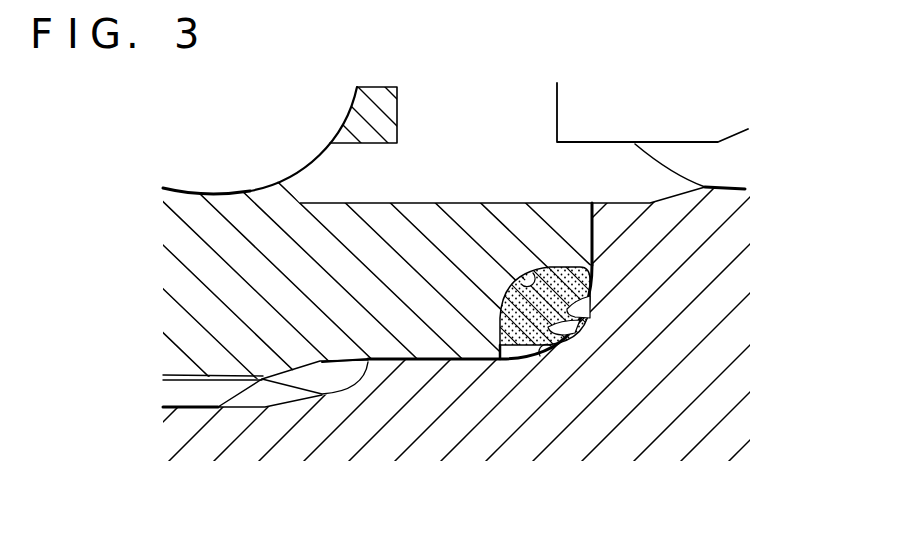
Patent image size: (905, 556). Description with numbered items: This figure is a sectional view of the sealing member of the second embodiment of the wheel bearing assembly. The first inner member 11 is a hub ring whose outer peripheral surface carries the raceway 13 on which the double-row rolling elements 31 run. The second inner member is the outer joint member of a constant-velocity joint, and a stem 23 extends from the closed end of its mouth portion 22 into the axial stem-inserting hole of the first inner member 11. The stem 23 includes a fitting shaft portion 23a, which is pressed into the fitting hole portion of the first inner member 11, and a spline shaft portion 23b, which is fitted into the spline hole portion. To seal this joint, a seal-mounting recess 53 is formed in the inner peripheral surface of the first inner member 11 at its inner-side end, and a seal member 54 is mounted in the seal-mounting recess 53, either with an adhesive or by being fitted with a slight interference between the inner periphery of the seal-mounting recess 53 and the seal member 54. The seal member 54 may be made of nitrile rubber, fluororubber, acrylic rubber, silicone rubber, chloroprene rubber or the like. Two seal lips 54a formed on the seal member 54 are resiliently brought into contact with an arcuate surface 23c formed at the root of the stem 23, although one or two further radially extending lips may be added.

The first inner member 11 is at (413, 203).
The raceway 13 is at (200, 189).
The mouth portion 22 is at (718, 295).
The stem 23 is at (187, 428).
The fitting shaft portion 23a is at (409, 370).
The spline shaft portion 23b is at (188, 375).
The arcuate surface 23c is at (548, 351).
The double-row rolling elements 31 is at (308, 117).
The seal-mounting recess 53 is at (528, 267).
The seal member 54 is at (515, 330).
The seal lips 54a is at (586, 308).